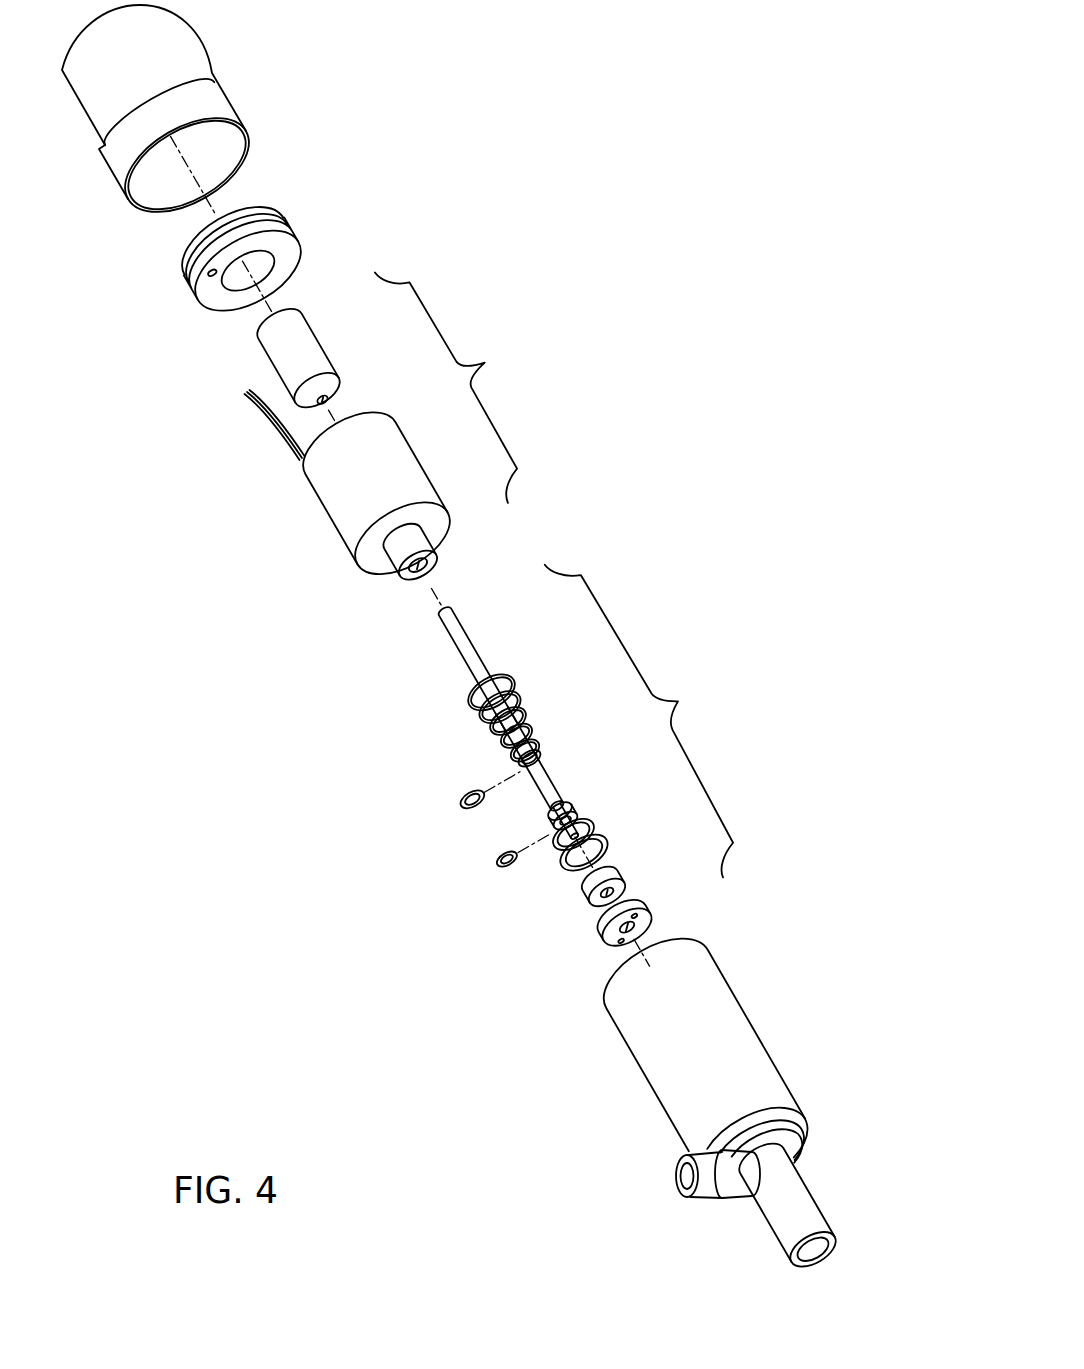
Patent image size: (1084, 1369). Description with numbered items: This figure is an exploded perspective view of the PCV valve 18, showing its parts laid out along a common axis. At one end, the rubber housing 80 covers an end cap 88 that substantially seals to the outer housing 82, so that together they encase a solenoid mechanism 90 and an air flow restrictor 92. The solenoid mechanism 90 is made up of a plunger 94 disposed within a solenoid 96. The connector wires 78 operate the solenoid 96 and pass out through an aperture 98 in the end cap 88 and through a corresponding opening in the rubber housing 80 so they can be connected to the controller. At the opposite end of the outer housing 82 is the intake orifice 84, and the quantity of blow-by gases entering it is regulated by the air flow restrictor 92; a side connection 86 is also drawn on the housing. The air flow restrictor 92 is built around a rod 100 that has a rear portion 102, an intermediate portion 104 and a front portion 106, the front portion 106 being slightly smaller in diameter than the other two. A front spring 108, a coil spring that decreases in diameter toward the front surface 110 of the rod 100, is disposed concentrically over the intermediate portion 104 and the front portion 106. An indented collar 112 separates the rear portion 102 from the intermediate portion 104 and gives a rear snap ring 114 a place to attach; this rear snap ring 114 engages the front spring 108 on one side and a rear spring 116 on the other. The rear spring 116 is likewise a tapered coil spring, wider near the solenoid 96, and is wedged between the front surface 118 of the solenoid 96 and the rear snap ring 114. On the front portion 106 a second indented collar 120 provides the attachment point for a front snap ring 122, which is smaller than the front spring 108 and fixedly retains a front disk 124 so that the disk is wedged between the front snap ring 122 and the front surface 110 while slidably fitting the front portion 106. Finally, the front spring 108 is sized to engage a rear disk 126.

The PCV valve 18 is at (466, 246).
The connector wires 78 is at (270, 423).
The rubber housing 80 is at (190, 58).
The outer housing 82 is at (750, 1057).
The intake orifice 84 is at (815, 1248).
The inlet port 86 is at (687, 1177).
The end cap 88 is at (292, 238).
The solenoid mechanism 90 is at (463, 374).
The air flow restrictor 92 is at (654, 709).
The plunger 94 is at (312, 345).
The solenoid 96 is at (412, 468).
The aperture 98 is at (212, 276).
The rod 100 is at (445, 632).
The rear portion 102 is at (507, 717).
The intermediate portion 104 is at (550, 783).
The front portion 106 is at (595, 832).
The front spring 108 is at (603, 852).
The front surface 110 is at (547, 808).
The indented collar 112 is at (543, 757).
The rear snap ring 114 is at (458, 790).
The rear spring 116 is at (500, 680).
The front surface 118 is at (436, 558).
The indented collar 120 is at (573, 813).
The front snap ring 122 is at (505, 872).
The front disk 124 is at (613, 937).
The rear disk 126 is at (598, 900).